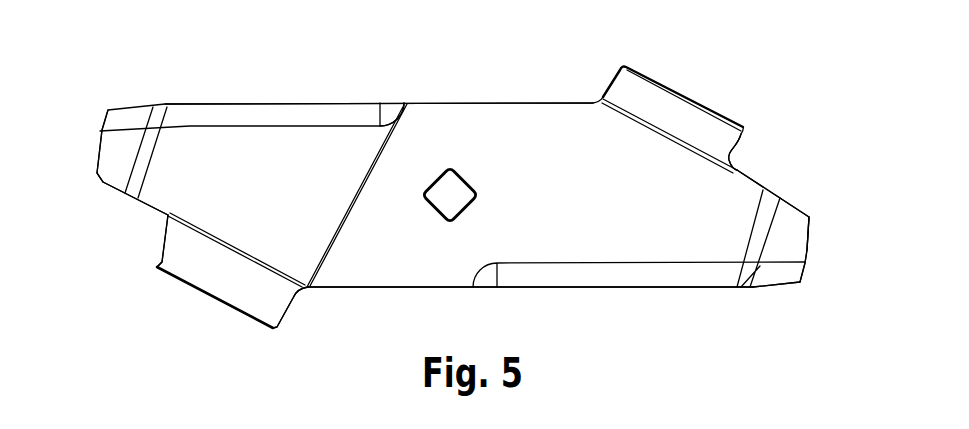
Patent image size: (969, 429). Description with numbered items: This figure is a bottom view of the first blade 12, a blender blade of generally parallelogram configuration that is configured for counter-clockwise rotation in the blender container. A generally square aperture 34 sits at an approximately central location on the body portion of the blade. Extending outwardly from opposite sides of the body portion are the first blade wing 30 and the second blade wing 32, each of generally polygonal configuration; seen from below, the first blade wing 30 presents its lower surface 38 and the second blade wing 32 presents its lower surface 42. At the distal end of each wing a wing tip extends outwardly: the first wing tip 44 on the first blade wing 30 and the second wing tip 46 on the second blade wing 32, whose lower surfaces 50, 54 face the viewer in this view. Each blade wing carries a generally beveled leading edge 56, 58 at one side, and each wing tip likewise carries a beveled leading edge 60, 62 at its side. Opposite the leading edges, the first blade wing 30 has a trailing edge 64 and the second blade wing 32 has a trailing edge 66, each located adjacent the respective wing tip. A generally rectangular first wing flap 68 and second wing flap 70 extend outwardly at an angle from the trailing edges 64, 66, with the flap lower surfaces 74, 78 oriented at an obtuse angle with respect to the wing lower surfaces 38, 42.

The first blade 12 is at (766, 93).
The first blade wing 30 is at (645, 222).
The second blade wing 32 is at (306, 236).
The aperture 34 is at (455, 197).
The lower surface 38 is at (525, 145).
The lower surface 42 is at (330, 145).
The first wing tip 44 is at (800, 242).
The second wing tip 46 is at (111, 178).
The lower surface 50 is at (788, 225).
The lower surface 54 is at (113, 145).
The leading edge 56 is at (582, 277).
The leading edge 58 is at (255, 115).
The leading edge 60 is at (770, 283).
The leading edge 62 is at (137, 118).
The trailing edge 64 is at (750, 177).
The trailing edge 66 is at (150, 210).
The first wing flap 68 is at (656, 95).
The second wing flap 70 is at (238, 296).
The lower surface 74 is at (697, 133).
The lower surface 78 is at (197, 258).